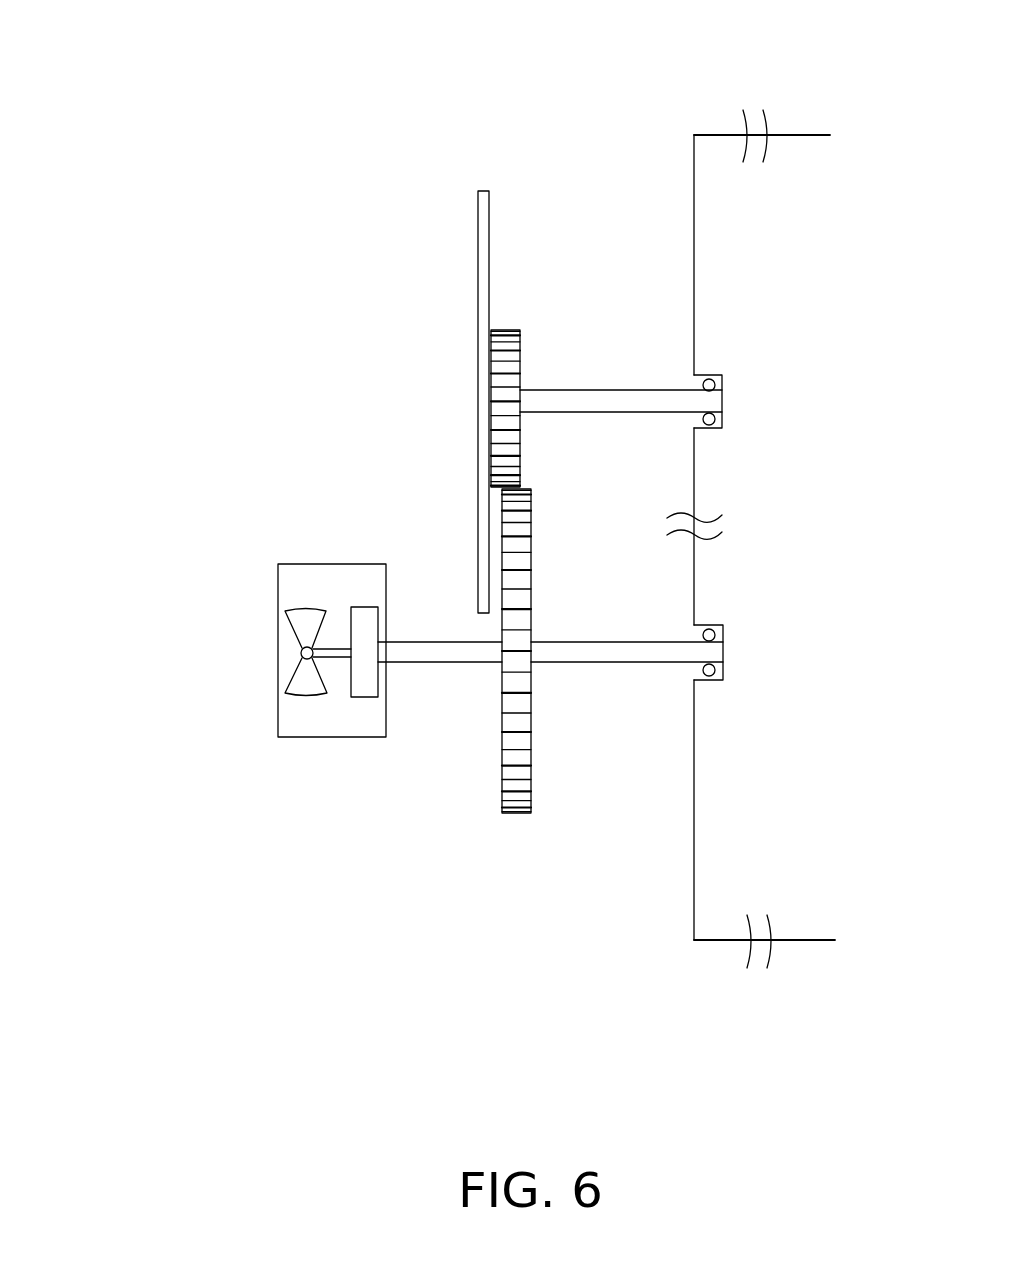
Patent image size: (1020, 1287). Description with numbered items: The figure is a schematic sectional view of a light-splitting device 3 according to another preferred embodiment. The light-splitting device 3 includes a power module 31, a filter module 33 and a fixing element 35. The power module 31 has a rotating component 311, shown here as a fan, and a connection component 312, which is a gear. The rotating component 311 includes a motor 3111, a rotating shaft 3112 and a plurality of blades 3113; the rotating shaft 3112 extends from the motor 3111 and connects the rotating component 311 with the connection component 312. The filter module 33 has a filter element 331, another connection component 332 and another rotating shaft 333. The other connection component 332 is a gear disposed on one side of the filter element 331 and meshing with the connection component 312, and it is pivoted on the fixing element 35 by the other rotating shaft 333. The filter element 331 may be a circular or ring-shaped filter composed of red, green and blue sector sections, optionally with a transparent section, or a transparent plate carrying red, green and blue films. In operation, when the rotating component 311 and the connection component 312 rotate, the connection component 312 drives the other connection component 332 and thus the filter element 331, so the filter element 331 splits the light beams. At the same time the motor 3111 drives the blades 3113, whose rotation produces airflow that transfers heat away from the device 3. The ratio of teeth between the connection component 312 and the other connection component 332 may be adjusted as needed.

The light-splitting device 3 is at (385, 34).
The power module 31 is at (135, 795).
The rotating component 311 is at (342, 728).
The connection component 312 is at (513, 814).
The motor 3111 is at (366, 618).
The rotating shaft 3112 is at (447, 652).
The blades 3113 is at (307, 620).
The filter module 33 is at (143, 1037).
The filter element 331 is at (485, 202).
The another connection component 332 is at (508, 329).
The another rotating shaft 333 is at (643, 400).
The fixing element 35 is at (792, 922).